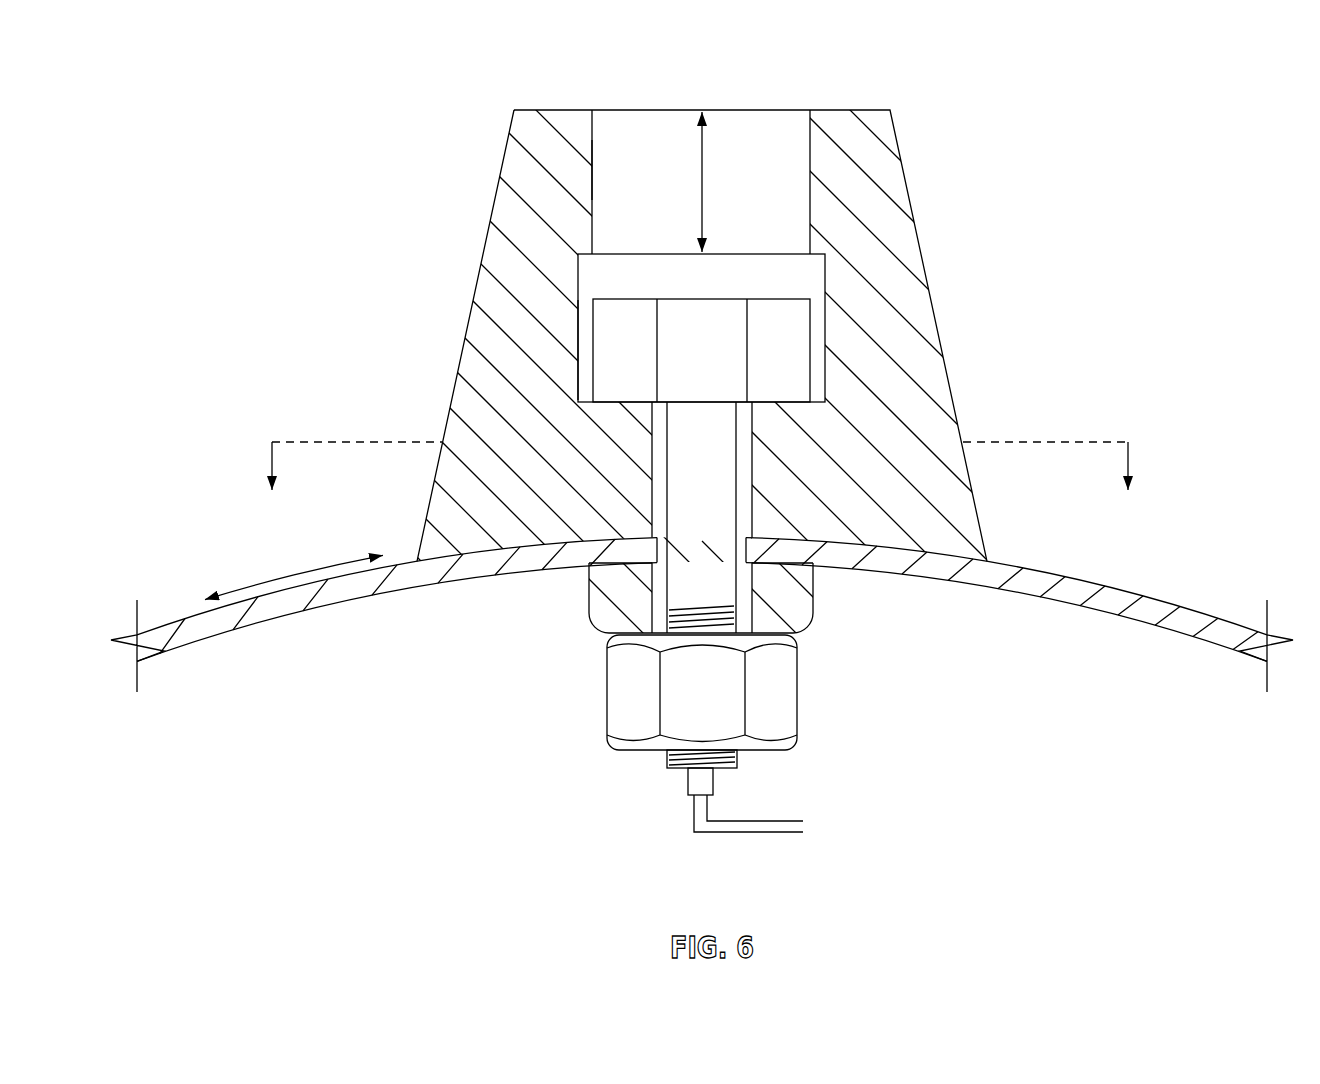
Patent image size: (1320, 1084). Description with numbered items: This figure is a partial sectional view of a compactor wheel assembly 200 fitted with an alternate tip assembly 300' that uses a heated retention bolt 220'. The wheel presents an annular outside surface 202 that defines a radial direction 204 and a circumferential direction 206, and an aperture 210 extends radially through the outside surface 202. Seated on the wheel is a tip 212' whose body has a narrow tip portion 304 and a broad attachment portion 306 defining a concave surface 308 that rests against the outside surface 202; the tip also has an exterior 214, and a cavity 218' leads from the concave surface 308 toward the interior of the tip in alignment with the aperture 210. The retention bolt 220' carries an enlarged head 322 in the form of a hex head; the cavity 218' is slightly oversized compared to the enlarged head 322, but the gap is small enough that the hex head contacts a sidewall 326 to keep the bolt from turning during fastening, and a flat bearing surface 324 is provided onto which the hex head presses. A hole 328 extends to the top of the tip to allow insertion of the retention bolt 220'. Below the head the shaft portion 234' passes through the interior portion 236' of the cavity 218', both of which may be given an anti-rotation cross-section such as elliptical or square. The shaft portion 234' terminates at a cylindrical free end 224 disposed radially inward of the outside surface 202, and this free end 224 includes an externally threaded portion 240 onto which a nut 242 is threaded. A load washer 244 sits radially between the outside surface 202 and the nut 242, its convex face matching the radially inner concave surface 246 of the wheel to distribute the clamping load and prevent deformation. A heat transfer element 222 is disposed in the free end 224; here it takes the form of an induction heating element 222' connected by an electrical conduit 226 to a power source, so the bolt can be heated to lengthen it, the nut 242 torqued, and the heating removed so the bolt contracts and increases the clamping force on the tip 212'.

The compactor wheel assembly 200 is at (893, 72).
The tip assembly 300' is at (1010, 112).
The outside surface 202 is at (1130, 585).
The radial direction 204 is at (703, 148).
The circumferential direction 206 is at (255, 582).
The aperture 210 is at (773, 590).
The tip 212' is at (1044, 484).
The exterior 214 is at (921, 243).
The cavity 218' is at (743, 219).
The retention bolt 220' is at (566, 486).
The heat transfer element 222 is at (638, 806).
The induction heating element 222' is at (725, 831).
The free end 224 is at (728, 772).
The electrical conduit 226 is at (742, 848).
The shaft portion 234' is at (890, 497).
The interior portion 236' is at (557, 512).
The externally threaded portion 240 is at (740, 752).
The nut 242 is at (622, 683).
The load washer 244 is at (745, 548).
The radially inner concave surface 246 is at (1065, 600).
The narrow tip portion 304 is at (672, 110).
The broad attachment portion 306 is at (955, 548).
The concave surface 308 is at (435, 549).
The enlarged head 322 is at (727, 330).
The flat bearing surface 324 is at (587, 400).
The sidewall 326 is at (580, 267).
The hole 328 is at (593, 147).